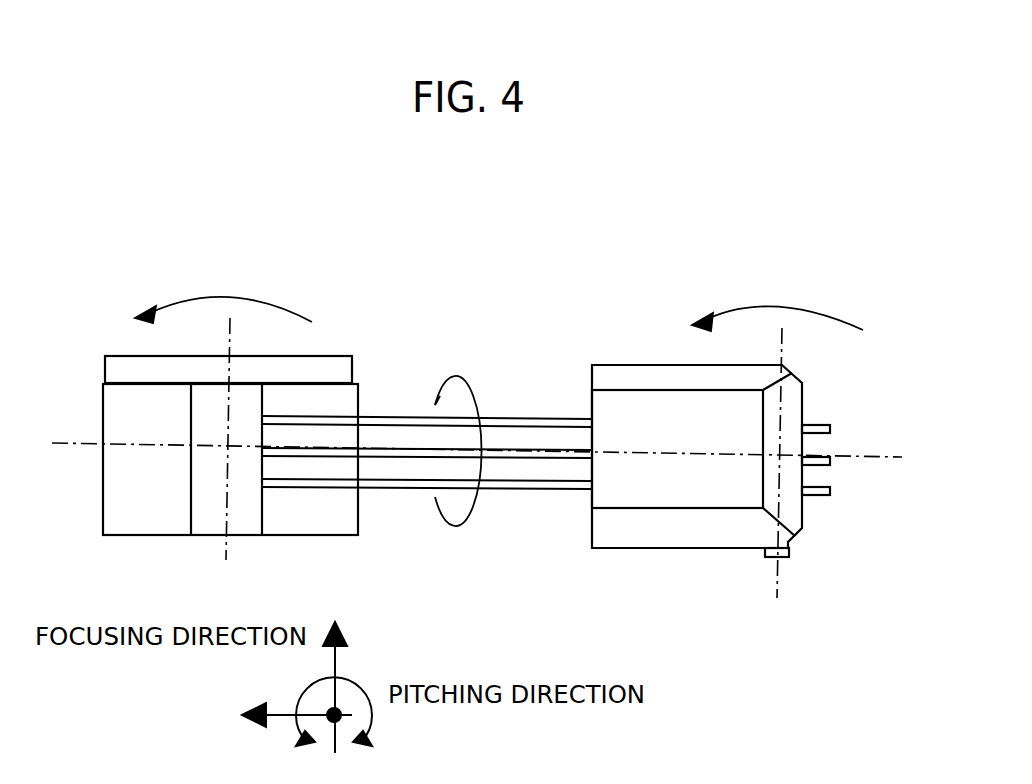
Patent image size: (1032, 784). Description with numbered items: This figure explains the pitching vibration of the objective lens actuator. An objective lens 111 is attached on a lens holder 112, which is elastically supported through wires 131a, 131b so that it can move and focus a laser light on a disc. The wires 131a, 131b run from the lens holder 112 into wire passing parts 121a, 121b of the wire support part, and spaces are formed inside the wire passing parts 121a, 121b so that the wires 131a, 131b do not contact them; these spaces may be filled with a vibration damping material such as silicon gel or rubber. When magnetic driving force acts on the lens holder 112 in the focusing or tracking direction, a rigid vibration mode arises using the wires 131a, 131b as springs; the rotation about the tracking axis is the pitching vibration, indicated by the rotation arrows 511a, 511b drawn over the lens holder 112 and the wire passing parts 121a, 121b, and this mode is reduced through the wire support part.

The objective lens 111 is at (315, 366).
The lens holder 112 is at (345, 403).
The wire passing part 121a is at (711, 510).
The wire passing part 121b is at (683, 535).
The wire 131a is at (427, 472).
The wire 131b is at (427, 472).
The rotation direction of lens holder 511a is at (223, 289).
The rotation direction of base member 511b is at (777, 297).